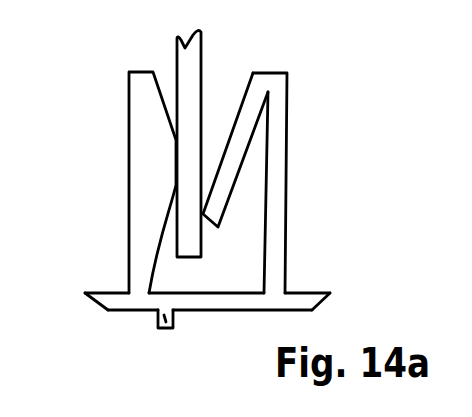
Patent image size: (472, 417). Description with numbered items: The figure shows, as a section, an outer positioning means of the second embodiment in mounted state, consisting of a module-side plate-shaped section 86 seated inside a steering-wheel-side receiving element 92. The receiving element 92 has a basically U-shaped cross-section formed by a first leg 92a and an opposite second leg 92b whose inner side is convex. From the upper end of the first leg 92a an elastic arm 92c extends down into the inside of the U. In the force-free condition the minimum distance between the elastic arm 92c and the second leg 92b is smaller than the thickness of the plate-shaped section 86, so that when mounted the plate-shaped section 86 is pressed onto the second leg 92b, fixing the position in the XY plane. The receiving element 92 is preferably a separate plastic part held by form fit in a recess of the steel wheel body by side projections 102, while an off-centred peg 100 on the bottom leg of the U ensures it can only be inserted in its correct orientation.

The plate-shaped section 86 is at (187, 128).
The receiving element 92 is at (206, 162).
The first leg 92a is at (272, 170).
The second leg 92b is at (147, 181).
The elastic arm 92c is at (252, 126).
The off-centred peg 100 is at (163, 328).
The side projections 102 is at (106, 303).